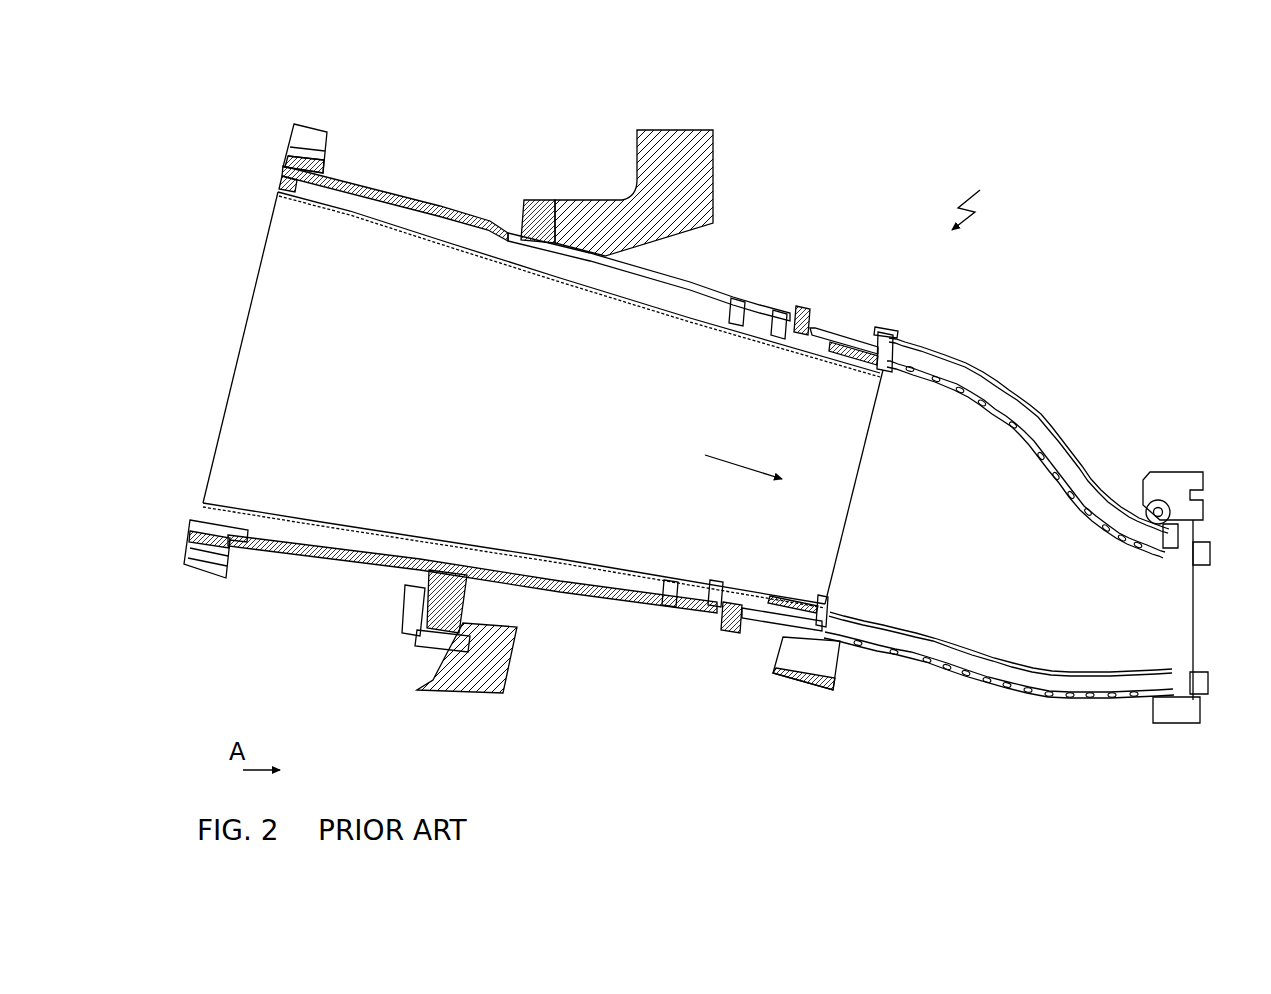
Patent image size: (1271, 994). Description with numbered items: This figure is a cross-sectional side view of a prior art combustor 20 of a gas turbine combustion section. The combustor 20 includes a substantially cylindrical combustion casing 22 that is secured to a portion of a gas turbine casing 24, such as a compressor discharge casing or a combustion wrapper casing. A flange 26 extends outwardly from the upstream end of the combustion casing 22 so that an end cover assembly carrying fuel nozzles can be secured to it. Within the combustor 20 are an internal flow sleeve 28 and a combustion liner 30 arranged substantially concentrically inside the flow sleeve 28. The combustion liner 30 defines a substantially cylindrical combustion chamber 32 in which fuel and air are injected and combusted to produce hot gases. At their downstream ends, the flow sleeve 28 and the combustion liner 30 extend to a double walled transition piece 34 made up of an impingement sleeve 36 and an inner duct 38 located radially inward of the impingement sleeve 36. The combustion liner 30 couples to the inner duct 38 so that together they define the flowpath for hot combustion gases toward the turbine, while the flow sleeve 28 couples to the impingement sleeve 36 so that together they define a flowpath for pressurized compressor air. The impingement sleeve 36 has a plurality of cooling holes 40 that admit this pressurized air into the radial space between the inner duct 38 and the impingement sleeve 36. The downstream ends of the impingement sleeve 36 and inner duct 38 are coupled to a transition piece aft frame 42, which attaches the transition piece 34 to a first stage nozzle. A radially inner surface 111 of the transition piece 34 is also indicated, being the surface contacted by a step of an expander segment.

The combustor 20 is at (987, 200).
The combustion casing 22 is at (412, 200).
The gas turbine casing 24 is at (716, 168).
The flange 26 is at (296, 126).
The flow sleeve 28 is at (684, 280).
The combustion liner 30 is at (447, 235).
The combustion chamber 32 is at (465, 403).
The transition piece 34 is at (1070, 400).
The impingement sleeve 36 is at (957, 680).
The inner duct 38 is at (1035, 690).
The cooling holes 40 is at (1020, 400).
The transition piece aft frame 42 is at (1210, 497).
The radially inner surface 111 is at (897, 375).